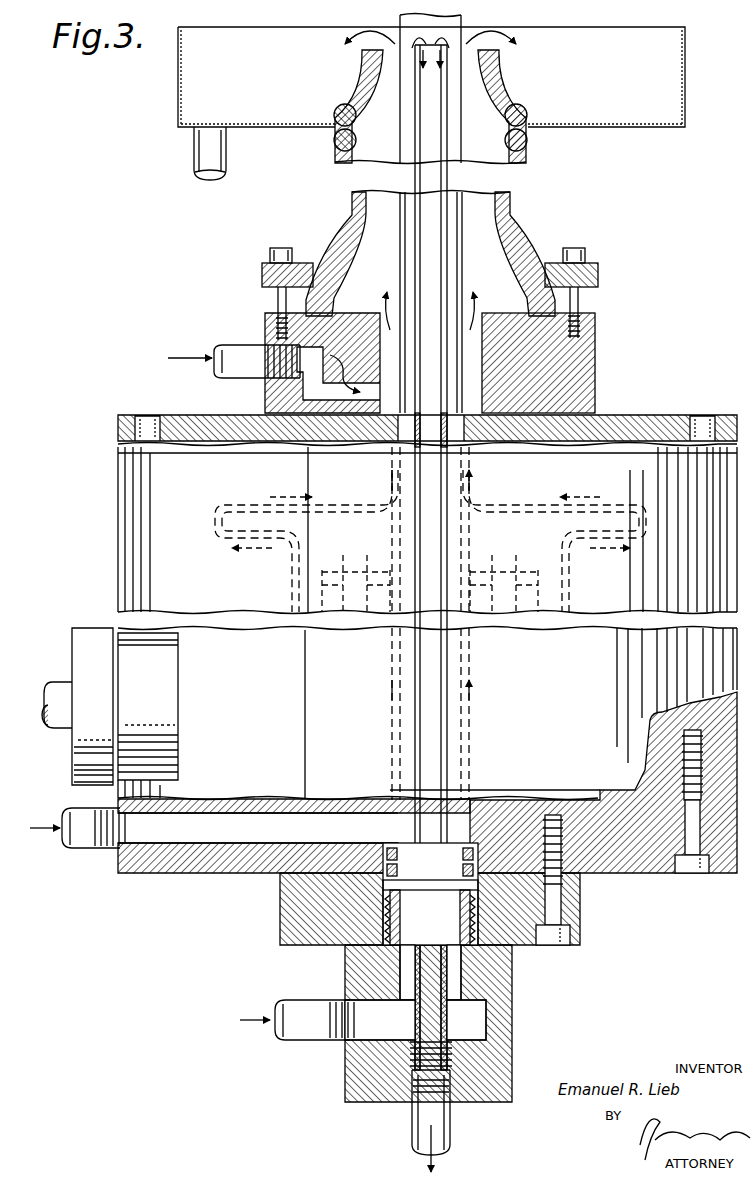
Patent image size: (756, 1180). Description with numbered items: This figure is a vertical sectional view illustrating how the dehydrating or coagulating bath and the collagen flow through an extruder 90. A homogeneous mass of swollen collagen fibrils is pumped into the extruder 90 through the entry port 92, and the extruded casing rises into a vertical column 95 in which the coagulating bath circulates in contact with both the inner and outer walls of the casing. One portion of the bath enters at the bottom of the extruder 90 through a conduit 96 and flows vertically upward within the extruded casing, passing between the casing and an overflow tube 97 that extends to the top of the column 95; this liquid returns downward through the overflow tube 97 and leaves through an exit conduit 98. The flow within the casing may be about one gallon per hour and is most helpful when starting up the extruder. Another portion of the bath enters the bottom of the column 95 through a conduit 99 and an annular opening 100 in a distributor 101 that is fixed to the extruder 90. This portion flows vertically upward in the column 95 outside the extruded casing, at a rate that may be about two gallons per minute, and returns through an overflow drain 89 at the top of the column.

The overflow drain 89 is at (228, 150).
The extruder 90 is at (118, 517).
The entry port 92 is at (78, 852).
The vertical column 95 is at (510, 218).
The conduit 96 is at (292, 1000).
The overflow tube 97 is at (448, 186).
The exit conduit 98 is at (414, 1120).
The conduit 99 is at (246, 376).
The annular opening 100 is at (384, 314).
The distributor 101 is at (595, 380).